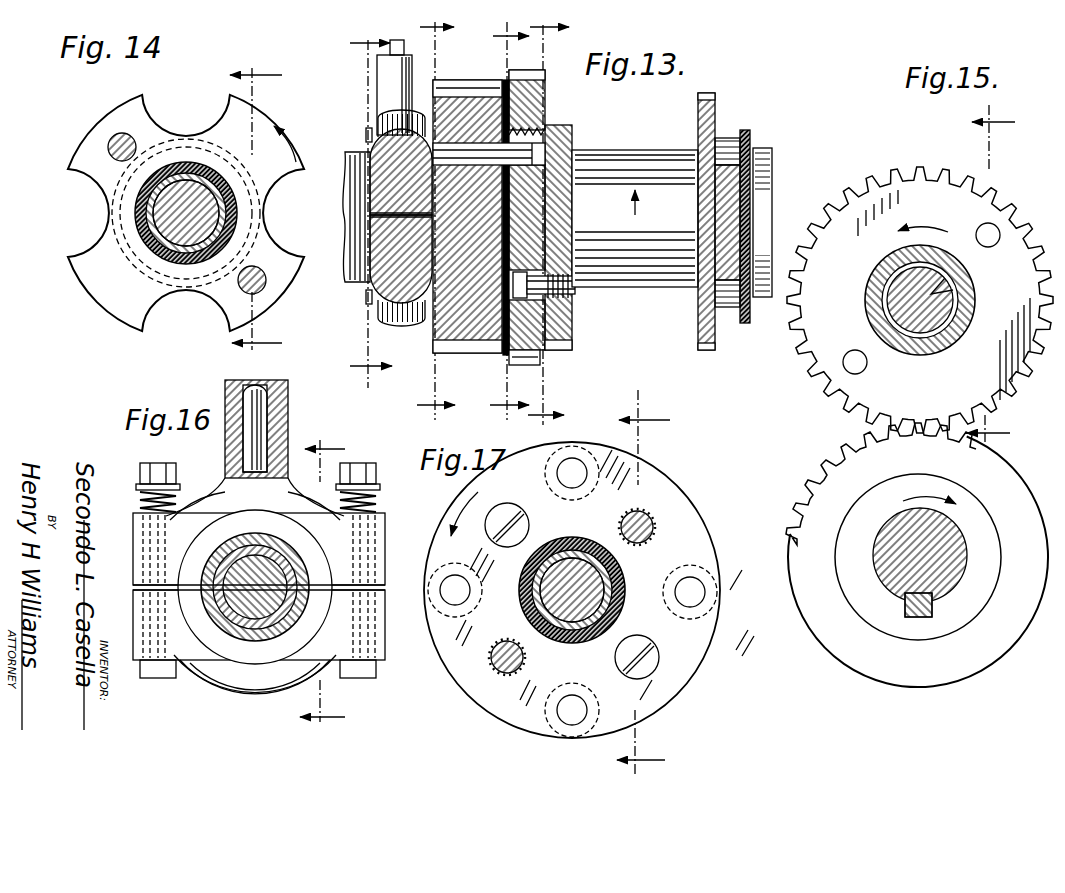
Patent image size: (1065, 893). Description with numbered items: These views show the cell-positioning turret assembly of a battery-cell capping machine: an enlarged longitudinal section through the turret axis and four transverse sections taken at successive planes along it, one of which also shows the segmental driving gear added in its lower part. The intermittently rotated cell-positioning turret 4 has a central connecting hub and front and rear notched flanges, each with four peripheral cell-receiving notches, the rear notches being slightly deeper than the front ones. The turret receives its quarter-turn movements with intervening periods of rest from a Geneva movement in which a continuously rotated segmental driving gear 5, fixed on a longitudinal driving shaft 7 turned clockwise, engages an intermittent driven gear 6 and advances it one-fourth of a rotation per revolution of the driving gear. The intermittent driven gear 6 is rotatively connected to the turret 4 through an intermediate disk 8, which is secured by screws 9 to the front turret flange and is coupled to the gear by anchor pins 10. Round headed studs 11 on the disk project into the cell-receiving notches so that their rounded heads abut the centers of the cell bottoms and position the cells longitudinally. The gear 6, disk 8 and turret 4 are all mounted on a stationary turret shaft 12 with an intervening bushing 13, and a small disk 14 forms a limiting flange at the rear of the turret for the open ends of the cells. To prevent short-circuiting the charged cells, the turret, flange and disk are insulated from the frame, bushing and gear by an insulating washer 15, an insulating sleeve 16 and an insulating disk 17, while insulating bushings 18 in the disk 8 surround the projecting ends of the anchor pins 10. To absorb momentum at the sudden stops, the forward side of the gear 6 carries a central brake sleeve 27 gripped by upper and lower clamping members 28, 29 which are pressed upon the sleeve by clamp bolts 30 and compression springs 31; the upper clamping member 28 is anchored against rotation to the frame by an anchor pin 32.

In FIG. 14, the cell-positioning turret 4 is at (218, 128).
In FIG. 13, the cell-positioning turret 4 is at (664, 272).
In FIG. 17, the cell-positioning turret 4 is at (589, 590).
In FIG. 15, the segmental driving gear 5 is at (835, 473).
In FIG. 13, the intermittent driven gear 6 is at (470, 88).
In FIG. 15, the intermittent driven gear 6 is at (1036, 228).
In FIG. 15, the driving shaft 7 is at (888, 554).
In FIG. 13, the intermediate disk 8 is at (566, 327).
In FIG. 14, the screws 9 is at (124, 133).
In FIG. 13, the screws 9 is at (573, 290).
In FIG. 17, the screws 9 is at (510, 504).
In FIG. 13, the anchor pins 10 is at (575, 141).
In FIG. 15, the anchor pins 10 is at (981, 227).
In FIG. 17, the anchor pins 10 is at (647, 516).
In FIG. 13, the round headed studs 11 is at (540, 108).
In FIG. 17, the round headed studs 11 is at (581, 499).
In FIG. 14, the stationary turret shaft 12 is at (152, 210).
In FIG. 15, the stationary turret shaft 12 is at (956, 284).
In FIG. 16, the stationary turret shaft 12 is at (251, 607).
In FIG. 17, the stationary turret shaft 12 is at (545, 607).
In FIG. 14, the bushing 13 is at (125, 270).
In FIG. 15, the bushing 13 is at (962, 350).
In FIG. 16, the bushing 13 is at (322, 581).
In FIG. 17, the bushing 13 is at (630, 618).
In FIG. 13, the small disk 14 is at (745, 332).
In FIG. 13, the insulating washer 15 is at (781, 191).
In FIG. 14, the insulating sleeve 16 is at (137, 229).
In FIG. 13, the insulating sleeve 16 is at (371, 206).
In FIG. 17, the insulating sleeve 16 is at (554, 551).
In FIG. 13, the insulating disk 17 is at (482, 371).
In FIG. 13, the insulating bushings 18 is at (553, 131).
In FIG. 17, the insulating bushings 18 is at (656, 522).
In FIG. 16, the brake sleeve 27 is at (228, 546).
In FIG. 13, the upper clamping member 28 is at (385, 150).
In FIG. 16, the upper clamping member 28 is at (259, 522).
In FIG. 13, the lower clamping member 29 is at (386, 298).
In FIG. 16, the lower clamping member 29 is at (247, 672).
In FIG. 16, the clamp bolts 30 is at (146, 465).
In FIG. 16, the compression springs 31 is at (140, 499).
In FIG. 13, the anchor pin 32 is at (397, 50).
In FIG. 16, the anchor pin 32 is at (259, 408).